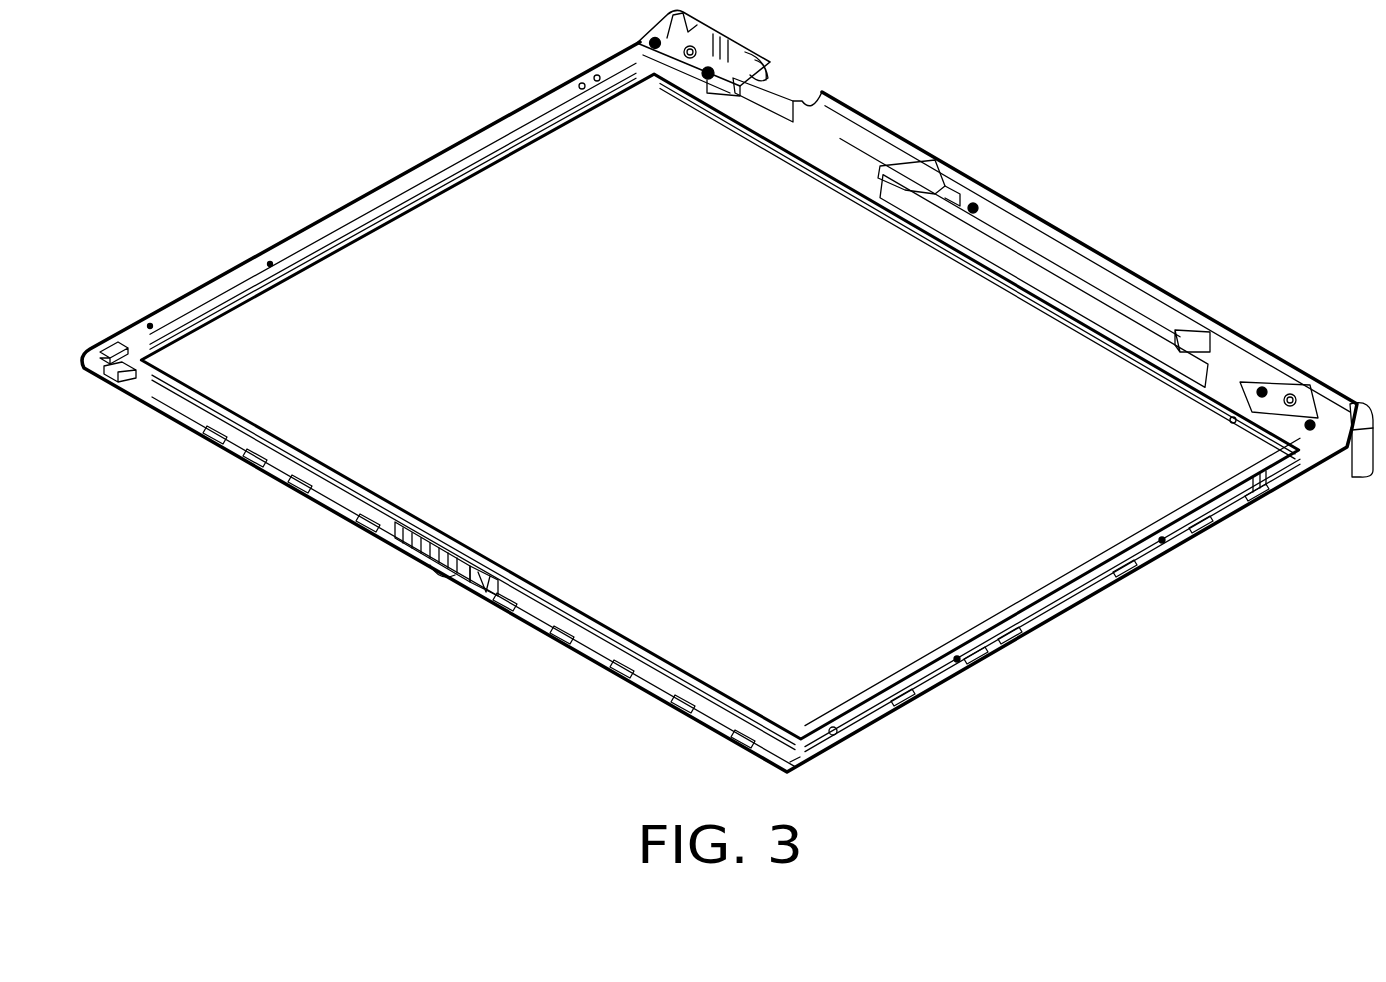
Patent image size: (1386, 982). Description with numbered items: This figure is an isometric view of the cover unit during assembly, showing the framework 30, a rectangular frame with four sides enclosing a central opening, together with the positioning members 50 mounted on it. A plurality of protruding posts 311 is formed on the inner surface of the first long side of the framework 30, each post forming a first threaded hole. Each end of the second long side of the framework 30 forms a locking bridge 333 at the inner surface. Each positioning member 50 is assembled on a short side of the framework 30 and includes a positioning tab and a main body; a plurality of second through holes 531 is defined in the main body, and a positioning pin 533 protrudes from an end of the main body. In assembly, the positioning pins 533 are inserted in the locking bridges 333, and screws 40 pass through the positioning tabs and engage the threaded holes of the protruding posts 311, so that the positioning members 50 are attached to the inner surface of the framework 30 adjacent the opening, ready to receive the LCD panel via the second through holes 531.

The framework 30 is at (860, 150).
The protruding post 311 is at (1233, 420).
The screw 40 is at (1262, 388).
The positioning member 50 is at (1088, 578).
The second through hole 531 is at (150, 322).
The positioning pin 533 is at (108, 376).
The locking bridge 333 is at (105, 350).